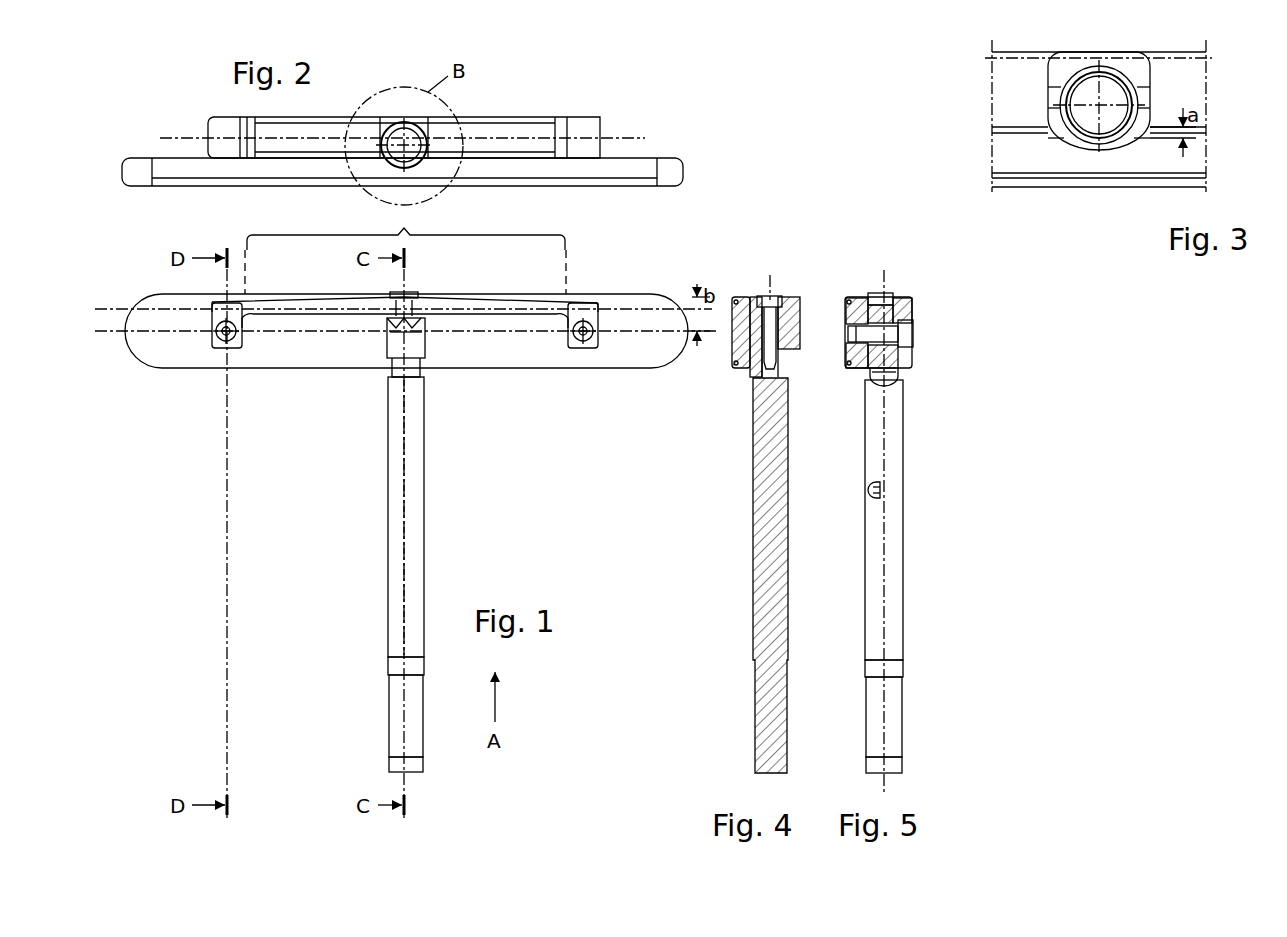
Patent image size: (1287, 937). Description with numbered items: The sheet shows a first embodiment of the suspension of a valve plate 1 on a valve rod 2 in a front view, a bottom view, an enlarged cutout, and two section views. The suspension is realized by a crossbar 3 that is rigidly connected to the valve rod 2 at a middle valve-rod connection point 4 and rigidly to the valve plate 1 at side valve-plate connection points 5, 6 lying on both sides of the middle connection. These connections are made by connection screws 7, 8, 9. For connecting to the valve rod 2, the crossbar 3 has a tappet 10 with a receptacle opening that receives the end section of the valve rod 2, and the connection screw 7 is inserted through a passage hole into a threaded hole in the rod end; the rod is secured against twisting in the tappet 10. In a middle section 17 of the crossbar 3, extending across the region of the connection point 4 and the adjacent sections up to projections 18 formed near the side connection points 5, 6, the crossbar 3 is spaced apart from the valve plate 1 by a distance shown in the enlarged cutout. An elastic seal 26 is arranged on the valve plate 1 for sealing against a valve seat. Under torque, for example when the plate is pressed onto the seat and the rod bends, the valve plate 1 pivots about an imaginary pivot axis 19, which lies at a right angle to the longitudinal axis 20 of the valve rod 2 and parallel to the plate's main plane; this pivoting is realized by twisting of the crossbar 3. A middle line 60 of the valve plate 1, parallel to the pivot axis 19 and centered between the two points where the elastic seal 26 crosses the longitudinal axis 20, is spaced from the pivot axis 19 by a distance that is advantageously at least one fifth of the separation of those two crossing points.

In FIG. 2, the valve plate 1 is at (668, 157).
In FIG. 3, the valve plate 1 is at (1058, 192).
In FIG. 1, the valve plate 1 is at (172, 372).
In FIG. 4, the valve plate 1 is at (741, 384).
In FIG. 5, the valve plate 1 is at (850, 296).
In FIG. 2, the valve rod 2 is at (427, 132).
In FIG. 3, the valve rod 2 is at (1140, 82).
In FIG. 1, the valve rod 2 is at (430, 494).
In FIG. 4, the valve rod 2 is at (792, 556).
In FIG. 5, the valve rod 2 is at (908, 545).
In FIG. 2, the crossbar 3 is at (516, 115).
In FIG. 3, the crossbar 3 is at (1182, 48).
In FIG. 1, the crossbar 3 is at (326, 326).
In FIG. 4, the crossbar 3 is at (790, 296).
In FIG. 5, the crossbar 3 is at (906, 296).
In FIG. 1, the middle valve-rod connection point 4 is at (384, 342).
In FIG. 1, the side valve-plate connection point 5 is at (218, 352).
In FIG. 1, the side valve-plate connection point 6 is at (581, 356).
In FIG. 1, the connection screw 7 is at (411, 296).
In FIG. 4, the connection screw 7 is at (770, 300).
In FIG. 5, the connection screw 7 is at (878, 300).
In FIG. 1, the connection screw 8 is at (216, 334).
In FIG. 5, the connection screw 8 is at (914, 330).
In FIG. 1, the connection screw 9 is at (589, 342).
In FIG. 1, the tappet 10 is at (422, 344).
In FIG. 2, the middle section 17 is at (405, 250).
In FIG. 5, the projection 18 is at (872, 364).
In FIG. 2, the pivot axis 19 is at (182, 135).
In FIG. 1, the pivot axis 19 is at (104, 306).
In FIG. 1, the longitudinal axis 20 is at (408, 546).
In FIG. 4, the elastic seal 26 is at (736, 366).
In FIG. 5, the elastic seal 26 is at (848, 304).
In FIG. 1, the middle line 60 is at (506, 334).